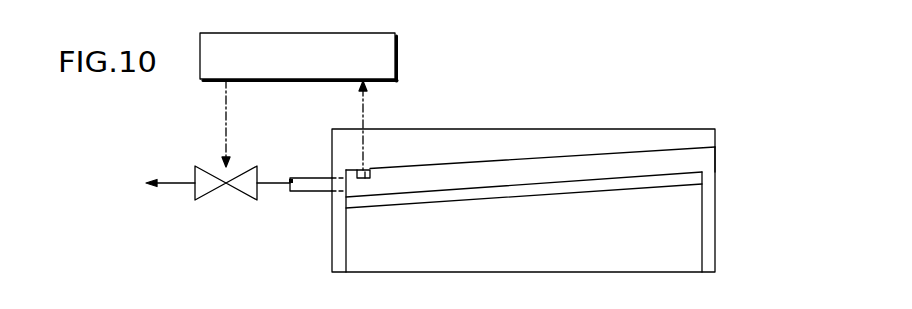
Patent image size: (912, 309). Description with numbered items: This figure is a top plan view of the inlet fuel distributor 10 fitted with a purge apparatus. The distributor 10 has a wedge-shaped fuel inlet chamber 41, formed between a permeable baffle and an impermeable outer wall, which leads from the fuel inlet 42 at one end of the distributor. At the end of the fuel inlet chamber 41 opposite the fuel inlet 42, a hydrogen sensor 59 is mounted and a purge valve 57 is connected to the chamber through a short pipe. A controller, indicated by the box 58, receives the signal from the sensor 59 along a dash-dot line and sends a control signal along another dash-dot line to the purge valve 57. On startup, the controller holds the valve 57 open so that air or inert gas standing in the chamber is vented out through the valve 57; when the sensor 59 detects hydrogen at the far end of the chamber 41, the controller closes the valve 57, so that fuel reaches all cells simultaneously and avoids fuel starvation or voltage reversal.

The inlet fuel distributor 10 is at (712, 88).
The fuel inlet chamber 41 is at (543, 176).
The fuel inlet 42 is at (712, 158).
The purge valve 57 is at (226, 186).
The fuel flow fields 58 is at (281, 33).
The hydrogen sensor 59 is at (372, 187).